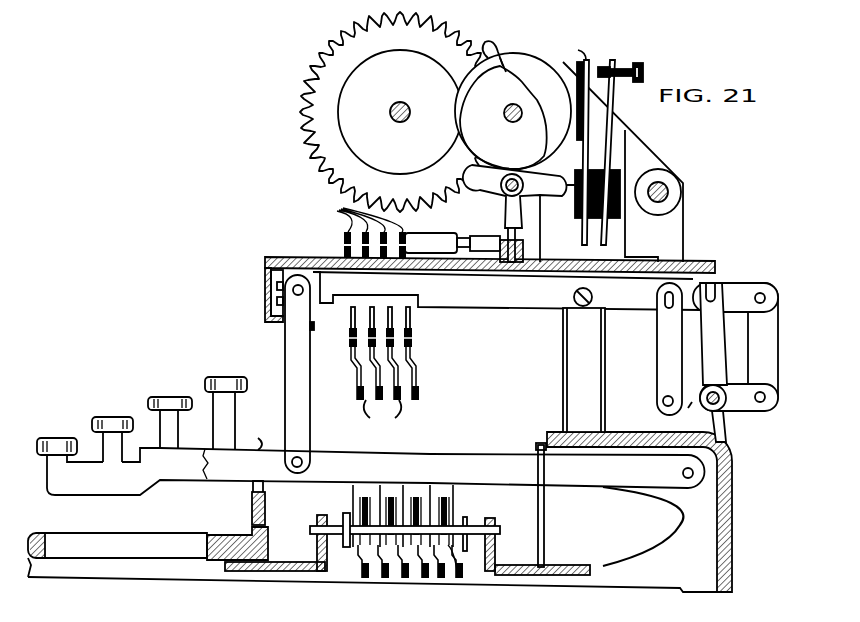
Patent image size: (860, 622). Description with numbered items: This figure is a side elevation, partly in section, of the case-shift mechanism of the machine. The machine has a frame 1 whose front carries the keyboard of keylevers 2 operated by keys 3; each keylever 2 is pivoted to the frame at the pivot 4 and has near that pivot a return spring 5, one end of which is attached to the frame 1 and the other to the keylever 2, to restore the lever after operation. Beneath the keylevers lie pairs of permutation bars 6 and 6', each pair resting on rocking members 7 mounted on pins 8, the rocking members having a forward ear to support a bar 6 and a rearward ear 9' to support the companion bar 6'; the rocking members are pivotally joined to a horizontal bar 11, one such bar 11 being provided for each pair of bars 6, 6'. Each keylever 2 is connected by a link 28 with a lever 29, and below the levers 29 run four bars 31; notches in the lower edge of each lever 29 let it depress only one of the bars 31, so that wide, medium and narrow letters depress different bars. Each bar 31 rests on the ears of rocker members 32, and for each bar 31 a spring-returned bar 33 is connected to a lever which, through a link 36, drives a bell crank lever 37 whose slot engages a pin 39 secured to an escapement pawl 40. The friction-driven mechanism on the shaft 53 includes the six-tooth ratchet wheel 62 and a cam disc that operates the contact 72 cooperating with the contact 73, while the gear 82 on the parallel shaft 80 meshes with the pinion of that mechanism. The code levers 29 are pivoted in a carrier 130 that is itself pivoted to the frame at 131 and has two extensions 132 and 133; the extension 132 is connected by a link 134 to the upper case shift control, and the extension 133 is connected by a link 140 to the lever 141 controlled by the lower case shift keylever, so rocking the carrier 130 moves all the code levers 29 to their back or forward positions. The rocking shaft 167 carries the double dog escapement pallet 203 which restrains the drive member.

The frame 1 is at (293, 257).
The keylever 2 is at (440, 456).
The key 3 is at (167, 397).
The keylever pivot 4 is at (694, 473).
The return spring 5 is at (660, 548).
The permutation bar 6 is at (430, 521).
The companion permutation bar 6' is at (422, 515).
The rocking member 7 is at (372, 578).
The pin 8 is at (462, 580).
The contact block 9' is at (468, 446).
The horizontal bar 11 is at (448, 580).
The link 28 is at (286, 350).
The lever 29 is at (528, 300).
The bar 31 is at (410, 327).
The rocker member 32 is at (398, 375).
The bar 33 is at (383, 413).
The link 36 is at (340, 212).
The bell crank lever 37 is at (470, 237).
The pin 39 is at (516, 232).
The escapement pawl 40 is at (500, 194).
The shaft 53 is at (504, 115).
The six-tooth ratchet wheel 62 is at (503, 60).
The contact 72 is at (594, 58).
The contact 73 is at (610, 62).
The shaft 80 is at (390, 114).
The gear 82 is at (322, 58).
The carrier 130 is at (708, 330).
The carrier pivot 131 is at (718, 430).
The extension 132 is at (690, 405).
The extension 133 is at (740, 404).
The link 134 is at (665, 366).
The link 140 is at (760, 348).
The lever 141 is at (741, 282).
The rocking shaft 167 is at (670, 190).
The double dog escapement pallet 203 is at (645, 152).